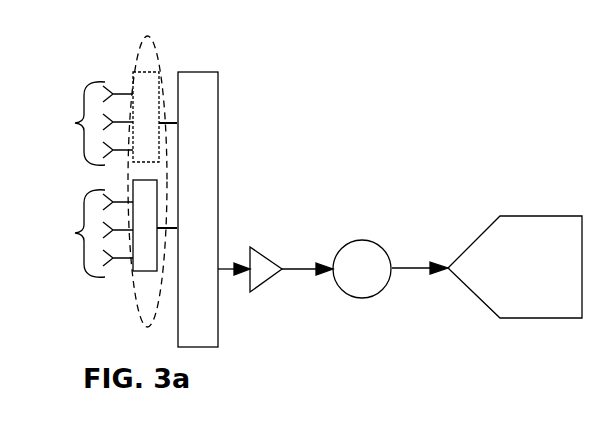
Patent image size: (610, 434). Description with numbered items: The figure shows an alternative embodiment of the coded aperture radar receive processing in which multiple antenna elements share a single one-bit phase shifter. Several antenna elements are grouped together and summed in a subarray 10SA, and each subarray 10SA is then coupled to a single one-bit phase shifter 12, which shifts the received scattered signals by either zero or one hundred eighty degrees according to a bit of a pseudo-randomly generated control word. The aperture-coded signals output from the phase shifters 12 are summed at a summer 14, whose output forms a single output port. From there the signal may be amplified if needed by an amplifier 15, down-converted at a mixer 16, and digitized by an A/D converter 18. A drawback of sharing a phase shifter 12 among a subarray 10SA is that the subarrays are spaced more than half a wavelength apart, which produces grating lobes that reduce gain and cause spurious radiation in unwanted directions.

The 1-bit phase shifter 12 is at (138, 52).
The subarray 10SA is at (75, 123).
The summer 14 is at (200, 332).
The amplifier 15 is at (262, 275).
The mixer 16 is at (368, 287).
The A/D converter 18 is at (525, 292).